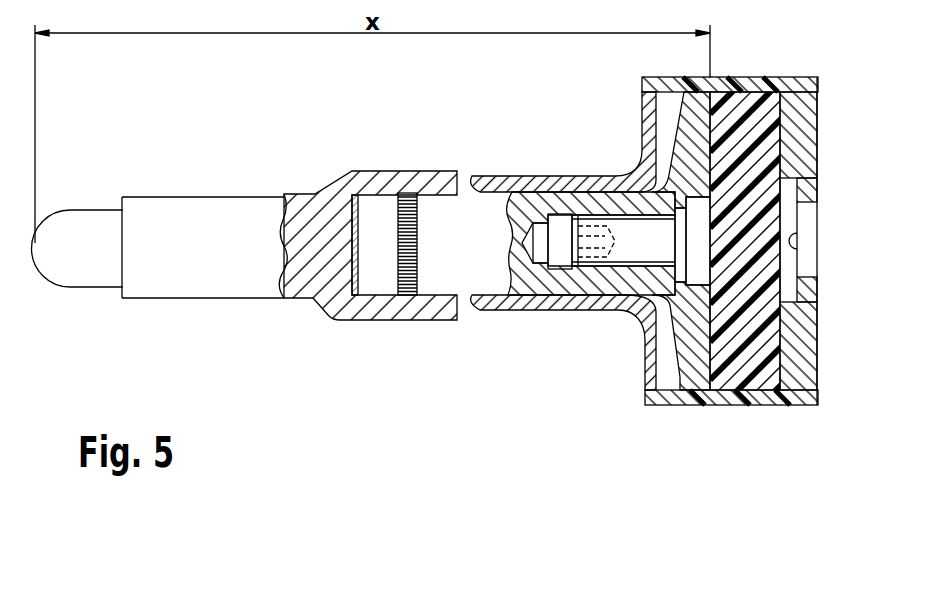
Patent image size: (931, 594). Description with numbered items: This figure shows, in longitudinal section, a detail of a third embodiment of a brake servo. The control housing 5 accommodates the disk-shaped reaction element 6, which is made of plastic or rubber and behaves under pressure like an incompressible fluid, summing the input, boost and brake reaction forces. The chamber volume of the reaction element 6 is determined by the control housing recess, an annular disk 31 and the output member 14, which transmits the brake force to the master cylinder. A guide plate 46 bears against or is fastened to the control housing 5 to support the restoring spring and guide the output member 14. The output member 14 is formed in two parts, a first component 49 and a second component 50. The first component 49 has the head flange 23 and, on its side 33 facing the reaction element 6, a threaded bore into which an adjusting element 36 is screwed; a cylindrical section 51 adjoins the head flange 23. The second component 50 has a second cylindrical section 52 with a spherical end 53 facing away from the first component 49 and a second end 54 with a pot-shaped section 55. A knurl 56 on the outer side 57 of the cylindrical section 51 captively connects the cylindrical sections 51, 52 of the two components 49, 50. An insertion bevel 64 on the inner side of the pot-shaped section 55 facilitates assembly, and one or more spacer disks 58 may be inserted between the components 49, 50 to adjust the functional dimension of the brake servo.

The control housing 5 is at (732, 237).
The reaction element 6 is at (750, 135).
The output member 14 is at (383, 232).
The head flange 23 is at (697, 350).
The annular disk 31 is at (802, 350).
The side facing toward the reaction element 33 is at (724, 354).
The adjusting element 36 is at (623, 277).
The guide plate 46 is at (538, 302).
The first component 49 is at (616, 183).
The second component 50 is at (204, 242).
The cylindrical section 51 is at (588, 270).
The second cylindrical section 52 is at (199, 270).
The spherical end 53 is at (58, 265).
The second end 54 is at (468, 176).
The pot-shaped section 55 is at (418, 170).
The knurl 56 is at (390, 262).
The outer side 57 is at (425, 302).
The spacer disk 58 is at (335, 305).
The insertion bevel 64 is at (468, 284).